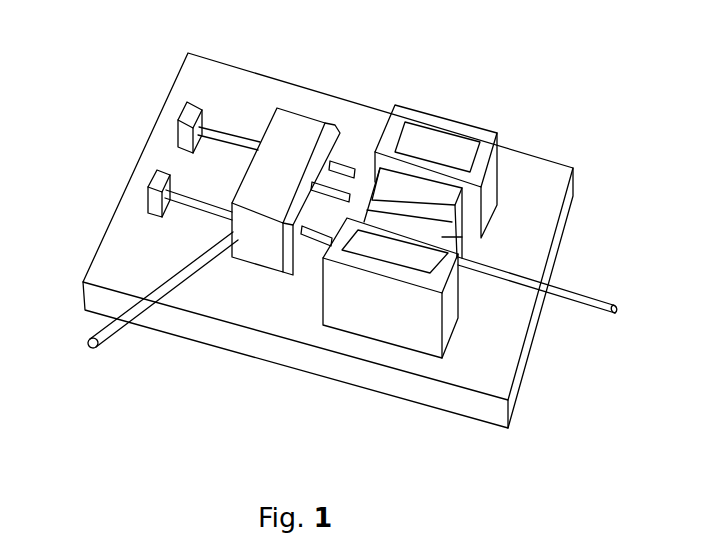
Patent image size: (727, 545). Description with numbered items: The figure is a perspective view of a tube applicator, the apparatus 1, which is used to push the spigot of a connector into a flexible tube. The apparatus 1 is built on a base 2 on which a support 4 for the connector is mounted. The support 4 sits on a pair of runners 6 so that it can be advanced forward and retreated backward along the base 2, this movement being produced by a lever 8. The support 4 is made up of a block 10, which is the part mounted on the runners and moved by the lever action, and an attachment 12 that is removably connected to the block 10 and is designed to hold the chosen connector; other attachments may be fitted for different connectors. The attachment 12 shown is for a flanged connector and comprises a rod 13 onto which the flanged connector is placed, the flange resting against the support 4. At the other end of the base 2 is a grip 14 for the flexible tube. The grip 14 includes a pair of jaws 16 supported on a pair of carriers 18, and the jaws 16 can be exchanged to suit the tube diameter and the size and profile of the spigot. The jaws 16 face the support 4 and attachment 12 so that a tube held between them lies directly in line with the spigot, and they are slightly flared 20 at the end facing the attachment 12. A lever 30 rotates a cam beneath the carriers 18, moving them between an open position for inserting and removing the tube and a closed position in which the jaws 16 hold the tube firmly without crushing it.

The apparatus 1 is at (349, 241).
The base 2 is at (168, 318).
The support 4 is at (194, 275).
The runners 6 is at (233, 130).
The lever 8 is at (110, 334).
The block 10 is at (252, 248).
The attachment 12 is at (285, 258).
The rod 13 is at (322, 196).
The grip 14 is at (460, 336).
The jaws 16 is at (380, 190).
The carriers 18 is at (457, 252).
The flare 20 is at (375, 195).
The lever 30 is at (603, 312).